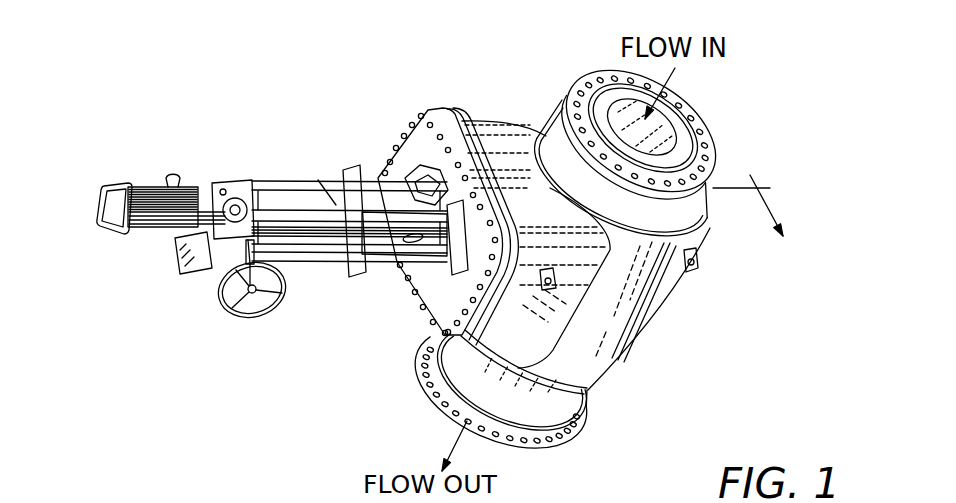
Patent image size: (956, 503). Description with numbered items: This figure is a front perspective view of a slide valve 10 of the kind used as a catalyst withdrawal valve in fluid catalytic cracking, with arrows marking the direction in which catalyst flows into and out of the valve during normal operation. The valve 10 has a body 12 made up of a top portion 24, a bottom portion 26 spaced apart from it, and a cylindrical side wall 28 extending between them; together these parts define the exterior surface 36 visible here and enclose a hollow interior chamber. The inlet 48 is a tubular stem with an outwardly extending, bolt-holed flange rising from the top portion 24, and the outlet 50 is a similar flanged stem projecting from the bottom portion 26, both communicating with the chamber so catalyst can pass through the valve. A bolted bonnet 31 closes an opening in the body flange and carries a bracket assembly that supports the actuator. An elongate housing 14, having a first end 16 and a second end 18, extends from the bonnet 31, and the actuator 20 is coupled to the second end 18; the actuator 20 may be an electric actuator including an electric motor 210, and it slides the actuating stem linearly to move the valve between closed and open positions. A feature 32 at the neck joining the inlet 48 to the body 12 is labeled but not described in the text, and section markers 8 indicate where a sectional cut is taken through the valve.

The valve 10 is at (345, 100).
The body 12 is at (626, 353).
The elongate housing 14 is at (273, 177).
The first end 16 is at (387, 158).
The second end 18 is at (248, 190).
The actuator 20 is at (152, 177).
The electric motor 210 is at (113, 237).
The top portion 24 is at (557, 117).
The bottom portion 26 is at (588, 398).
The cylindrical side wall 28 is at (635, 309).
The bonnet 31 is at (405, 127).
The inlet neck 32 is at (694, 232).
The exterior surface 36 is at (652, 271).
The inlet 48 is at (684, 97).
The outlet 50 is at (521, 448).
The section line 8- 8 is at (545, 192).